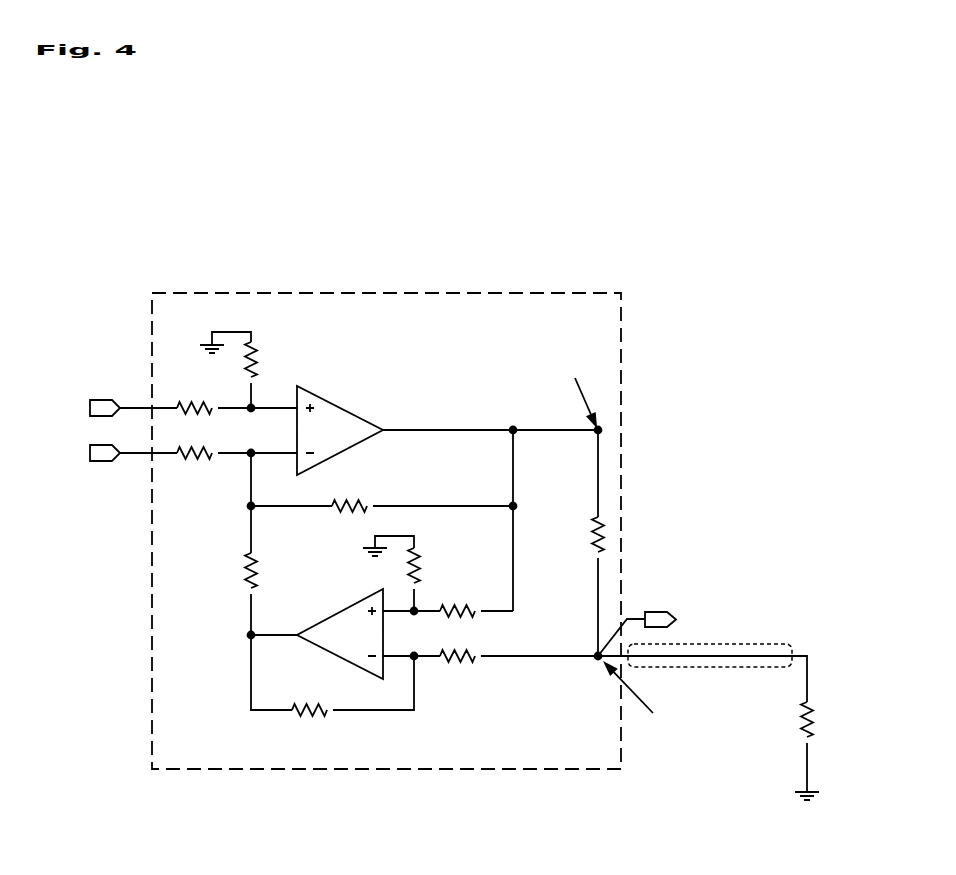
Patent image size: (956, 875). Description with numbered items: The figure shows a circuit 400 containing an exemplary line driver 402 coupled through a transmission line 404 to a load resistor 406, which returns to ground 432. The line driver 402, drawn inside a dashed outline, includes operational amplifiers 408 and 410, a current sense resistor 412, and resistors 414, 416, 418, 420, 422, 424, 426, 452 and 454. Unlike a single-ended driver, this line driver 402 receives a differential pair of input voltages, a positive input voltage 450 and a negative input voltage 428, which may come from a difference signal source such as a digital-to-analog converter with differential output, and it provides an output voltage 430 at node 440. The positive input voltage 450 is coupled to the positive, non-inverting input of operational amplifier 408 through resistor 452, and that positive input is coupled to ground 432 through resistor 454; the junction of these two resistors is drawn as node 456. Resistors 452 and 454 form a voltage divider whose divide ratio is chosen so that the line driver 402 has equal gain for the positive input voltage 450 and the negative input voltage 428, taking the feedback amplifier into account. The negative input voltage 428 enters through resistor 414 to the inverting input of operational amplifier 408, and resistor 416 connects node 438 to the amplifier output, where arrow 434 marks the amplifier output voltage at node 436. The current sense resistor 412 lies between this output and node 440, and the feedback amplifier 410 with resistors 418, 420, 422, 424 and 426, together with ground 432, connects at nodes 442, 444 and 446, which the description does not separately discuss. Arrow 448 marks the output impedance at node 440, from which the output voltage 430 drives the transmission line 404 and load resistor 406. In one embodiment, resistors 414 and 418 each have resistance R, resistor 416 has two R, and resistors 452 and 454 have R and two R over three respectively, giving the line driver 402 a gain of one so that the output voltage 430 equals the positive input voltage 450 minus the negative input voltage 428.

The amplifier circuit 400 is at (767, 90).
The line driver 402 is at (363, 293).
The transmission line 404 is at (736, 667).
The load resistor 406 is at (801, 721).
The operational amplifier 408 is at (345, 409).
The operational amplifier 410 is at (343, 608).
The current sense resistor 412 is at (593, 530).
The resistor 414 is at (193, 460).
The resistor 416 is at (368, 502).
The resistor 418 is at (245, 569).
The resistor 420 is at (312, 720).
The resistor 422 is at (420, 560).
The resistor 424 is at (462, 604).
The resistor 426 is at (460, 668).
The VIN 428 is at (90, 453).
The VOUT 430 is at (676, 627).
The ground 432 is at (212, 335).
The arrow 434 is at (580, 399).
The node 436 is at (597, 434).
The node 438 is at (245, 506).
The node 440 is at (597, 652).
The node 442 is at (414, 614).
The node 444 is at (416, 660).
The node 446 is at (247, 635).
The arrow 448 is at (628, 688).
The VIP 450 is at (90, 408).
The resistor 452 is at (193, 415).
The resistor 454 is at (257, 350).
The node 456 is at (251, 412).